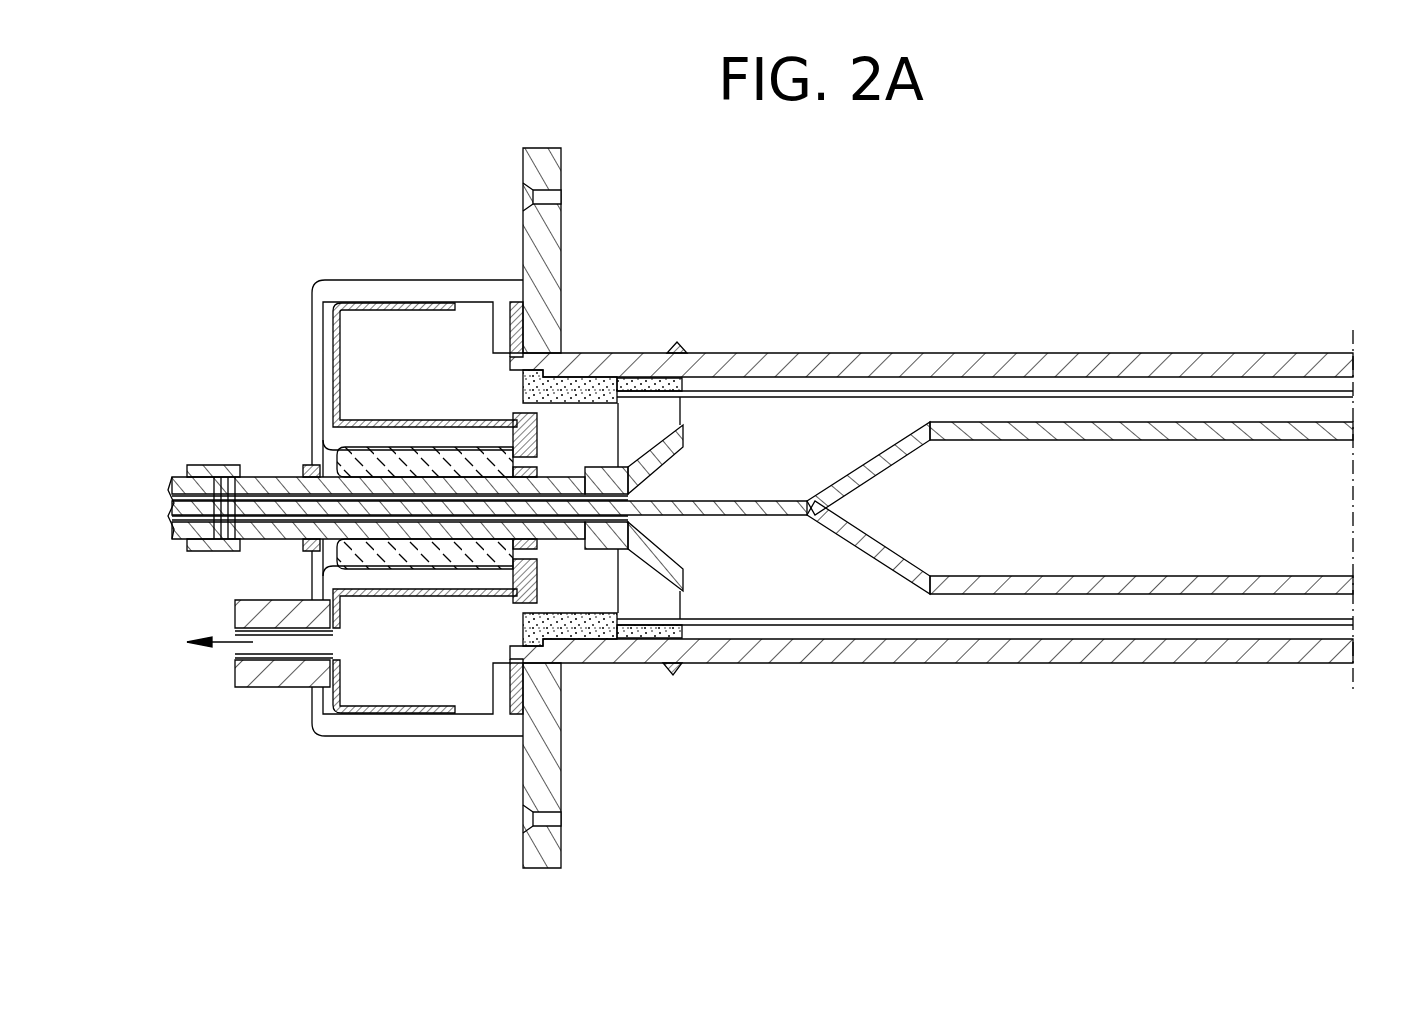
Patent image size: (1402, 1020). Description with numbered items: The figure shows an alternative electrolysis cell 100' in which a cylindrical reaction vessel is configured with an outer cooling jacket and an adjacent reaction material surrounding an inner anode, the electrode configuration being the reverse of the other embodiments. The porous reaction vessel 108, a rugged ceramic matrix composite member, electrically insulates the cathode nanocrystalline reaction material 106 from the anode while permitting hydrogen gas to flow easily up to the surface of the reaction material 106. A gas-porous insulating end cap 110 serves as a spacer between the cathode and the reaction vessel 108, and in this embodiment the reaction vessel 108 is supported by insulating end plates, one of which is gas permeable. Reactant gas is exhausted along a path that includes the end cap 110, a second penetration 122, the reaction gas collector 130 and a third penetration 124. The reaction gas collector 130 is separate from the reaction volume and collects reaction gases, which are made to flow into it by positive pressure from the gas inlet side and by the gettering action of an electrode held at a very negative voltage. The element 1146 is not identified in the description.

The cell 100' is at (985, 557).
The cathode nanocrystalline reaction material 106 is at (1188, 386).
The reaction vessel 108 is at (779, 392).
The end cap 110 is at (580, 385).
The nozzle cone holder 1146 is at (645, 420).
The second penetration 122 is at (523, 390).
The third penetration 124 is at (222, 644).
The reaction gas collector 130 is at (367, 398).